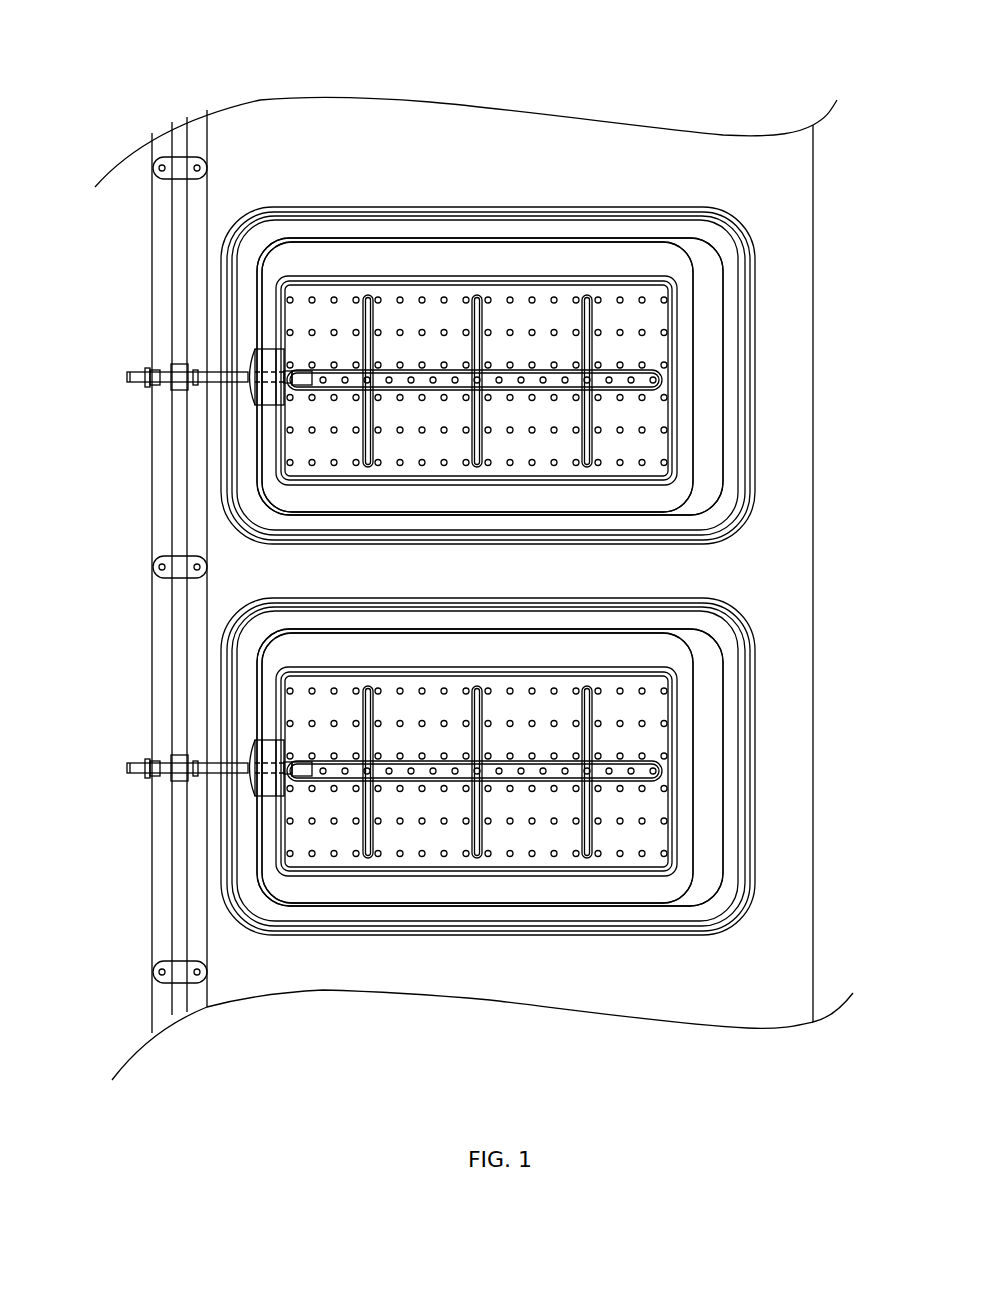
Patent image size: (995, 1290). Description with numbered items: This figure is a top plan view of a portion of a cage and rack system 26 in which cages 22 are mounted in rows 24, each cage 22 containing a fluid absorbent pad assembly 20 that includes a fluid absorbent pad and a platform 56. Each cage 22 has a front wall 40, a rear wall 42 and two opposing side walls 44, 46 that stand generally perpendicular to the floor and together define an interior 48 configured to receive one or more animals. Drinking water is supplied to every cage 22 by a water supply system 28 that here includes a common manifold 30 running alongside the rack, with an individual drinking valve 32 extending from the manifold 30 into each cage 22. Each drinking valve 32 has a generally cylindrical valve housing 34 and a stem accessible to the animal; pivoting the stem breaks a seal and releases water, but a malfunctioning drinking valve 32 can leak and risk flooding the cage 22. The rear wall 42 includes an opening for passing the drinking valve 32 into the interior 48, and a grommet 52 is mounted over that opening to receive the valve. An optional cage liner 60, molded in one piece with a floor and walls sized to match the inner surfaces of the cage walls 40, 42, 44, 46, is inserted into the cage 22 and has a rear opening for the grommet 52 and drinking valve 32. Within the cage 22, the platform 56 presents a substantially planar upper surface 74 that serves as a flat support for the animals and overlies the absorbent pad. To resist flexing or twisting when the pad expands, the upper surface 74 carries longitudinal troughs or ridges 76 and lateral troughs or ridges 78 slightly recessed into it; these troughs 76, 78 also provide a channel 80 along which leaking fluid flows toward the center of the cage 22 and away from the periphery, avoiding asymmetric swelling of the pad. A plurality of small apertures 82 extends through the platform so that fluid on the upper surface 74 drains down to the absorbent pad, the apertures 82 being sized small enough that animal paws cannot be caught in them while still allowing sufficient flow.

The fluid absorbent pad assembly 20 is at (490, 552).
The cage 22 is at (514, 570).
The row 24 is at (368, 125).
The cage and rack system 26 is at (758, 100).
The water supply system 28 is at (130, 571).
The manifold 30 is at (172, 298).
The drinking valve 32 is at (188, 385).
The valve housing 34 is at (215, 370).
The front wall 40 is at (733, 370).
The rear wall 42 is at (245, 282).
The side wall 44 is at (427, 232).
The side wall 46 is at (535, 520).
The interior 48 is at (323, 255).
The grommet 52 is at (272, 400).
The platform 56 is at (628, 470).
The cage liner 60 is at (683, 305).
The upper surface 74 is at (476, 576).
The longitudinal troughs or ridges 76 is at (453, 370).
The lateral troughs or ridges 78 is at (480, 312).
The channel 80 is at (398, 385).
The apertures 82 is at (597, 332).